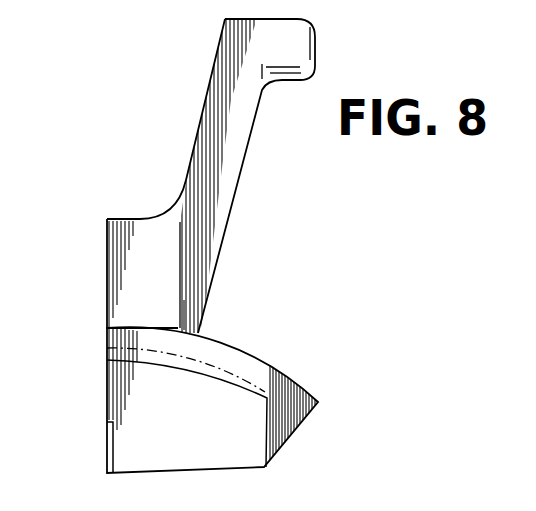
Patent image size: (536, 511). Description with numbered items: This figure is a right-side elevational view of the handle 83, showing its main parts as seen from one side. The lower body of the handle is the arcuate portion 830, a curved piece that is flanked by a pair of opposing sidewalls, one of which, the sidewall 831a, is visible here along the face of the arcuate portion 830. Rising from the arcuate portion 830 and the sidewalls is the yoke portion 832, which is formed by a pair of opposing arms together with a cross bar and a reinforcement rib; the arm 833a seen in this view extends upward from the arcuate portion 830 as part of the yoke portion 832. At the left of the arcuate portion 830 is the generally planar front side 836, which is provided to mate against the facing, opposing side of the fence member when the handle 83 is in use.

The handle 83 is at (97, 193).
The yoke portion 832 is at (246, 192).
The arm 833a is at (180, 292).
The arcuate portion 830 is at (268, 354).
The sidewall 831a is at (208, 423).
The front planar side 836 is at (107, 403).